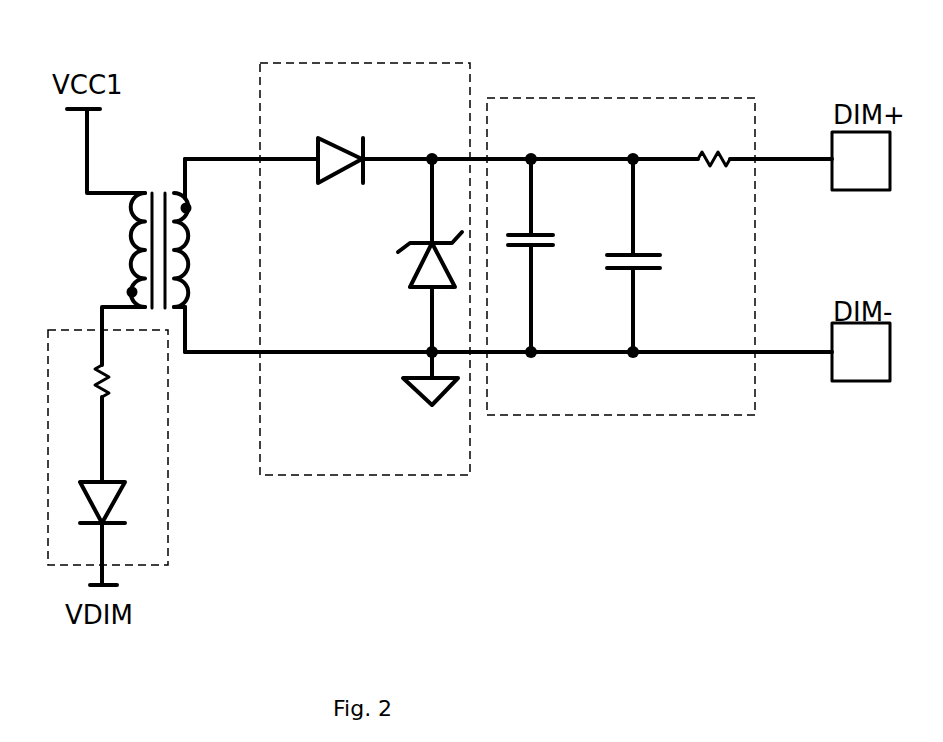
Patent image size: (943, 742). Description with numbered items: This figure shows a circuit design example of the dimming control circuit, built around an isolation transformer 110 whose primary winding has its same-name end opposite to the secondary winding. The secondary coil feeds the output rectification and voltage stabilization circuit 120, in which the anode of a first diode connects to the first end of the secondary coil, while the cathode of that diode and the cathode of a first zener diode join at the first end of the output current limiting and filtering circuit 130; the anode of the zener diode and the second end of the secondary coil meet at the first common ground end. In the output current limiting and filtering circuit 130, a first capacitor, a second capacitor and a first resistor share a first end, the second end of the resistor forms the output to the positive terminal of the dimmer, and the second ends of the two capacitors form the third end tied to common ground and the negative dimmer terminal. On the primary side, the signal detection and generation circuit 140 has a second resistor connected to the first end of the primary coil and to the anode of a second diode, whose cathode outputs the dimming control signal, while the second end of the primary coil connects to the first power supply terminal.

The isolation transformer 110 is at (100, 189).
The output rectification and voltage stabilization circuit 120 is at (368, 63).
The output current limiting and filtering circuit 130 is at (605, 98).
The signal detection and generation circuit 140 is at (168, 537).